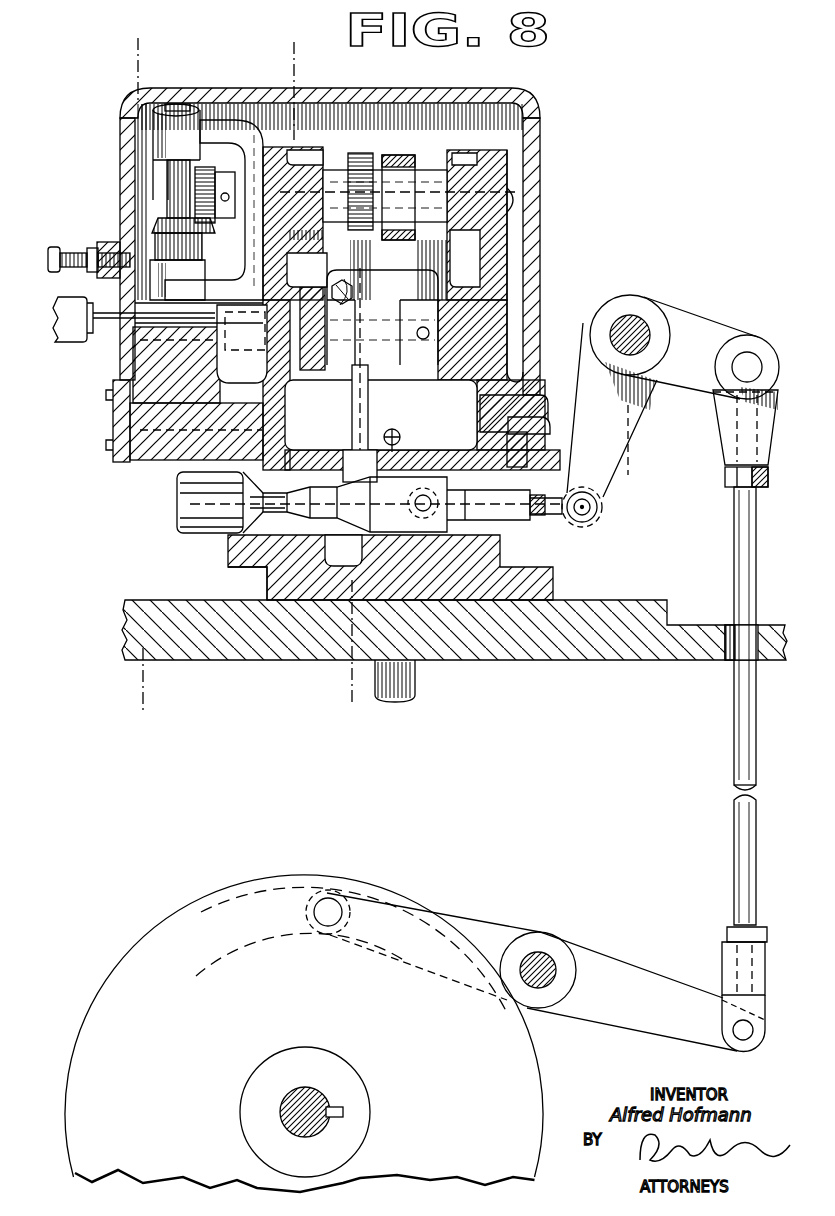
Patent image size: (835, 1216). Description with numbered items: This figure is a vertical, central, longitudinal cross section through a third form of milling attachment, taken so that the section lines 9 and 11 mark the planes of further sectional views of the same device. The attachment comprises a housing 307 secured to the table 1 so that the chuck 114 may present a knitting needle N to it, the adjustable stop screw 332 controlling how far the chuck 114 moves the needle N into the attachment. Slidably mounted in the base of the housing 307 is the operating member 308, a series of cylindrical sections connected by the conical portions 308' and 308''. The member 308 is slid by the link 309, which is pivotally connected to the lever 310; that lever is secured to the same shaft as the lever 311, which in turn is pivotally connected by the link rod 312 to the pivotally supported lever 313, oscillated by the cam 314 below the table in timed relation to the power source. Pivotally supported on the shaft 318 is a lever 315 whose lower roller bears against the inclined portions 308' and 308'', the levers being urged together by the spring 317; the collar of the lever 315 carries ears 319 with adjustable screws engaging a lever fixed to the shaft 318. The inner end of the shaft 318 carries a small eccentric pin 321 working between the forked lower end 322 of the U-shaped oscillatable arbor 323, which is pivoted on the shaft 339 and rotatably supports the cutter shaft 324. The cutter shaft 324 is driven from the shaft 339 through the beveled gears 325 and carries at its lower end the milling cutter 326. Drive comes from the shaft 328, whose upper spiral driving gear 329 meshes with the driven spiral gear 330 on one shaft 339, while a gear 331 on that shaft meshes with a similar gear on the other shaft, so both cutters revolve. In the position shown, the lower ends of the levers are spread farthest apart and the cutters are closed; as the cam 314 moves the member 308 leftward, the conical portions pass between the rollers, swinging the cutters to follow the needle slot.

The table 1 is at (532, 660).
The section line 9 is at (128, 65).
The section line 11 is at (285, 73).
The chuck 114 is at (64, 333).
The knitting needle N is at (106, 325).
The housing 307 is at (540, 232).
The operating member 308 is at (356, 518).
The conical portion 308' is at (390, 565).
The conical portion 308'' is at (228, 583).
The link 309 is at (562, 510).
The lever 310 is at (602, 492).
The lever 311 is at (676, 318).
The link rod 312 is at (735, 763).
The lever 313 is at (606, 962).
The cam 314 is at (402, 892).
The lever 315 is at (352, 420).
The spring 317 is at (400, 432).
The shaft 318 is at (517, 318).
The ear 319 is at (341, 365).
The eccentric pin 321 is at (258, 360).
The forked lower end 322 is at (240, 303).
The oscillatable arbor 323 is at (235, 130).
The cutter shaft 324 is at (172, 170).
The beveled gears 325 is at (196, 202).
The milling cutter 326 is at (172, 228).
The shaft 328 is at (416, 686).
The spiral driving gear 329 is at (432, 185).
The driven spiral gear 330 is at (386, 160).
The gear 331 is at (365, 150).
The adjustable stop screw 332 is at (74, 247).
The shaft 339 is at (512, 197).